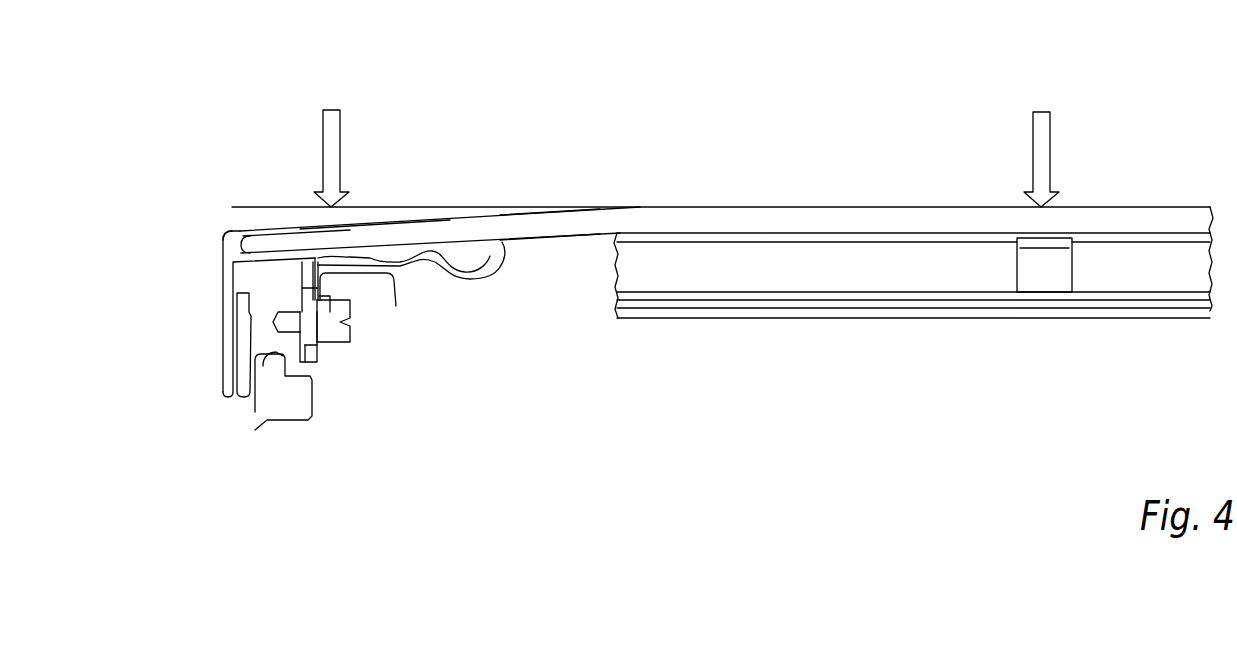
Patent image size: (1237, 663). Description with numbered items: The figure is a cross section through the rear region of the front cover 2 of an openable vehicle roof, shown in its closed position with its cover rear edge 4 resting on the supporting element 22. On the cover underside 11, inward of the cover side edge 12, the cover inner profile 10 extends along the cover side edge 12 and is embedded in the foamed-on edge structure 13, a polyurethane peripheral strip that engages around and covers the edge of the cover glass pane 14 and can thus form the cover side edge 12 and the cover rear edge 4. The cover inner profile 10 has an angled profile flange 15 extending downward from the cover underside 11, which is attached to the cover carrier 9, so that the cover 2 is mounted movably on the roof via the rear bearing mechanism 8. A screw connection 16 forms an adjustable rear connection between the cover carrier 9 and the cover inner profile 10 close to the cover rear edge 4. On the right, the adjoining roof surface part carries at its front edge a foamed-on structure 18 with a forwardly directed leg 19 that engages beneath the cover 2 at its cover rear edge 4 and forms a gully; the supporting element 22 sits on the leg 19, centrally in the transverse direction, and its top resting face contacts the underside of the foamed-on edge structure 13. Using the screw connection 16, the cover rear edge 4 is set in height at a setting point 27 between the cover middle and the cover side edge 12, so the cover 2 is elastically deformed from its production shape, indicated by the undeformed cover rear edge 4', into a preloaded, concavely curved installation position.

The cover 2 is at (797, 207).
The cover rear edge 4 is at (431, 220).
The undeformed cover rear edge 4' is at (309, 207).
The rear bearing mechanism 8 is at (238, 405).
The cover carrier 9 is at (308, 298).
The cover inner profile 10 is at (400, 262).
The cover underside 11 is at (545, 238).
The cover side edge 12 is at (223, 228).
The foamed-on edge structure 13 is at (1108, 240).
The cover glass pane 14 is at (476, 228).
The profile flange 15 is at (322, 283).
The screw connection 16 is at (318, 321).
The foamed-on structure 18 is at (1158, 313).
The leg 19 is at (1059, 306).
The supporting element 22 is at (1037, 273).
The setting point 27 is at (537, 214).